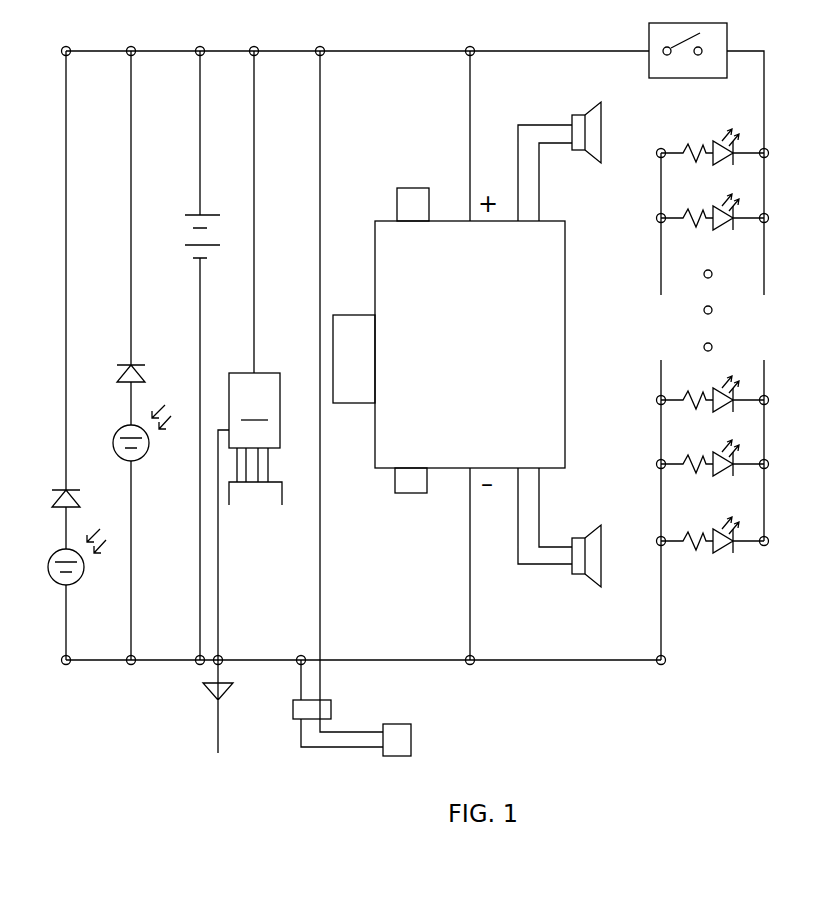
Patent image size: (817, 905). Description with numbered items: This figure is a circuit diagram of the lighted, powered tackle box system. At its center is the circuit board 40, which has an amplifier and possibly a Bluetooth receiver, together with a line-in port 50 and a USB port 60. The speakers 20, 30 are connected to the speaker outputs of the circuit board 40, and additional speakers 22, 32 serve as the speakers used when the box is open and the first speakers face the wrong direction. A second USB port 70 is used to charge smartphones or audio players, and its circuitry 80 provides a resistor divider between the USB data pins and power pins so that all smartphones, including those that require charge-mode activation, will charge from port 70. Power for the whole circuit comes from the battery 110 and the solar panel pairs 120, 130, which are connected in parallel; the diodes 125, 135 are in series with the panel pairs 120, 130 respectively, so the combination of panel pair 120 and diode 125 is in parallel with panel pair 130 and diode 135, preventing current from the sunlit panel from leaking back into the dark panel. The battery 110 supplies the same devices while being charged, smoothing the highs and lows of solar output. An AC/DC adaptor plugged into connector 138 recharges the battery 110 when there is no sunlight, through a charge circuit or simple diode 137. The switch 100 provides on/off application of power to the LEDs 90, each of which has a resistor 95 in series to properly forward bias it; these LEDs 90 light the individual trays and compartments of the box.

The speaker 20 is at (578, 152).
The additional speaker 22 is at (583, 161).
The speaker 30 is at (588, 536).
The additional speaker 32 is at (585, 527).
The circuit board 40 is at (503, 412).
The line-in port 50 is at (412, 186).
The USB port 60 is at (400, 496).
The USB port 70 is at (282, 492).
The circuitry 80 is at (254, 410).
The LEDs 90 is at (722, 163).
The resistors 95 is at (691, 159).
The switch 100 is at (672, 80).
The battery 110 is at (213, 250).
The solar panel pair 120 is at (78, 580).
The diode 125 is at (56, 494).
The solar panel pair 130 is at (143, 455).
The diode 135 is at (120, 368).
The charge circuit or diode 137 is at (331, 710).
The connector 138 is at (411, 745).